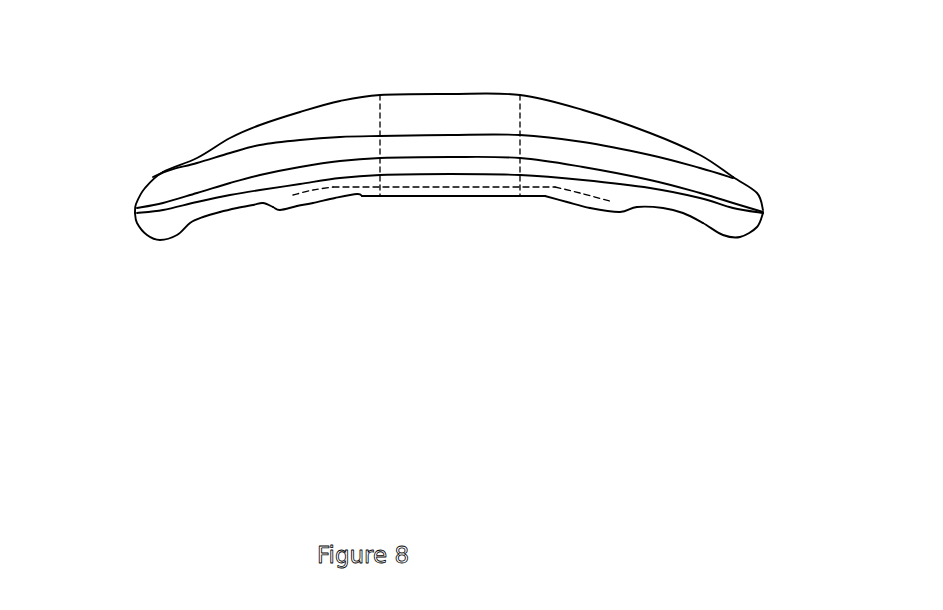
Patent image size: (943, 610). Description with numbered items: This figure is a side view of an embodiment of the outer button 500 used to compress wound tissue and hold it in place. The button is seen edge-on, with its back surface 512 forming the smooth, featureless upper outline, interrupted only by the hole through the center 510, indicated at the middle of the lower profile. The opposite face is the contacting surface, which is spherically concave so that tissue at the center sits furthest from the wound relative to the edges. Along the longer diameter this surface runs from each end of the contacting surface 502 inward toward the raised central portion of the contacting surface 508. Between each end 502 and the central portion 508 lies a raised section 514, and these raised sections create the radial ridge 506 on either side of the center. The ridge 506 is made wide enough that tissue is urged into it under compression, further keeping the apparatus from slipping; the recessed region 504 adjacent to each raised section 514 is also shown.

The device 500 is at (816, 45).
The end of the contacting surface 502 is at (133, 210).
The raised portion 504 is at (260, 213).
The radial ridge 506 is at (323, 202).
The raised central portion of the contacting surface 508 is at (527, 197).
The hole through the center 510 is at (487, 197).
The back surface of the outer button 512 is at (328, 133).
The raised section 514 is at (280, 213).